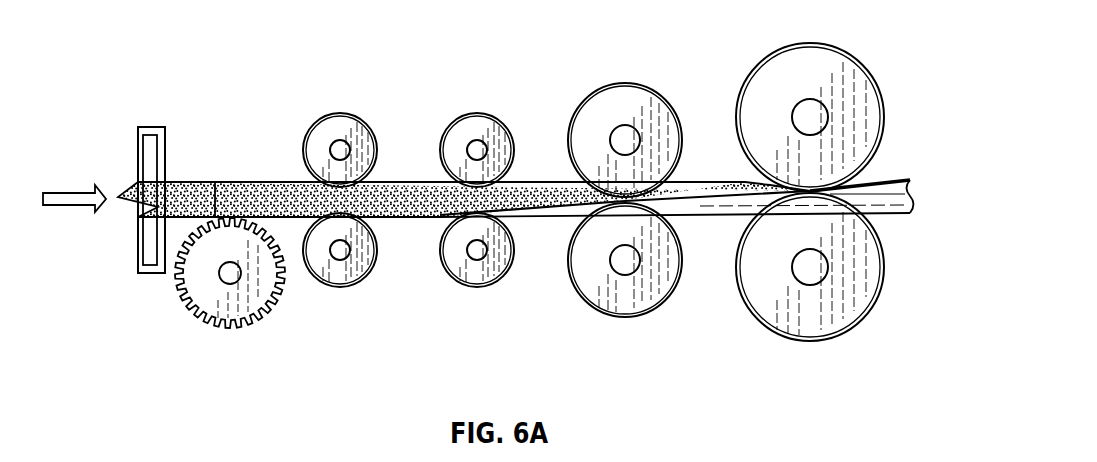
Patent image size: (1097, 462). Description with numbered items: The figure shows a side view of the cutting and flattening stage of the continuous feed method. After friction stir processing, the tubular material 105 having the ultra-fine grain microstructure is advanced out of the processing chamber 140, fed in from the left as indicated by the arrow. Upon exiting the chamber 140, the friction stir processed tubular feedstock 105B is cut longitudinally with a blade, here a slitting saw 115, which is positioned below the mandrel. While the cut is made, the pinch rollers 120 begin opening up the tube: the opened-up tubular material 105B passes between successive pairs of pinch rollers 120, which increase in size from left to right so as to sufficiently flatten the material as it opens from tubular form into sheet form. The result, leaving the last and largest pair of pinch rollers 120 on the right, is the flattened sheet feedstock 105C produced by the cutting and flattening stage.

The tubular material 105 is at (203, 124).
The friction stir processed tubular feedstock 105B is at (238, 182).
The flattened sheet feedstock 105C is at (897, 176).
The slitting saw 115 is at (225, 328).
The pinch rollers 120 is at (350, 112).
The processing chamber 140 is at (145, 108).